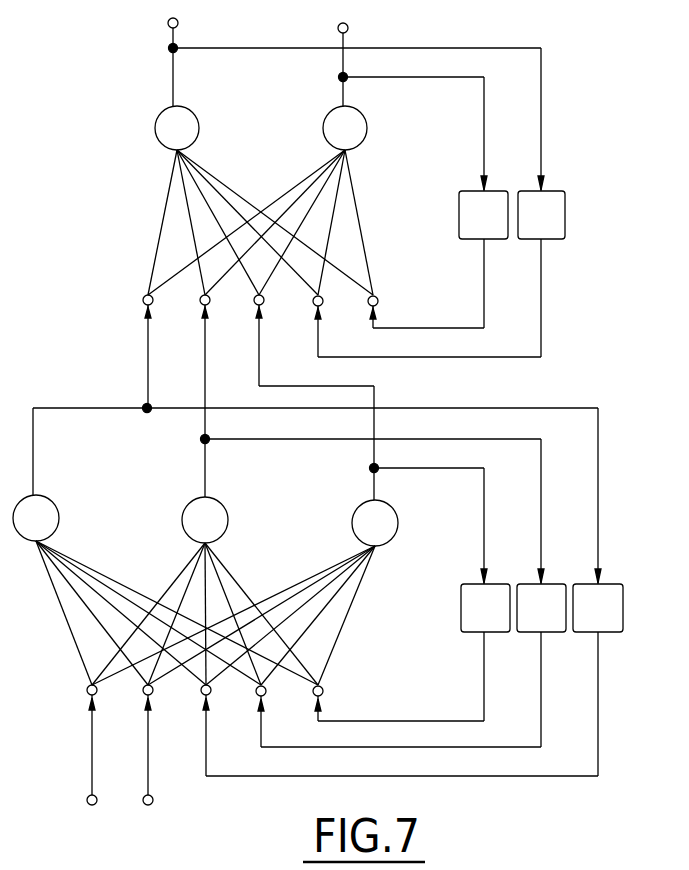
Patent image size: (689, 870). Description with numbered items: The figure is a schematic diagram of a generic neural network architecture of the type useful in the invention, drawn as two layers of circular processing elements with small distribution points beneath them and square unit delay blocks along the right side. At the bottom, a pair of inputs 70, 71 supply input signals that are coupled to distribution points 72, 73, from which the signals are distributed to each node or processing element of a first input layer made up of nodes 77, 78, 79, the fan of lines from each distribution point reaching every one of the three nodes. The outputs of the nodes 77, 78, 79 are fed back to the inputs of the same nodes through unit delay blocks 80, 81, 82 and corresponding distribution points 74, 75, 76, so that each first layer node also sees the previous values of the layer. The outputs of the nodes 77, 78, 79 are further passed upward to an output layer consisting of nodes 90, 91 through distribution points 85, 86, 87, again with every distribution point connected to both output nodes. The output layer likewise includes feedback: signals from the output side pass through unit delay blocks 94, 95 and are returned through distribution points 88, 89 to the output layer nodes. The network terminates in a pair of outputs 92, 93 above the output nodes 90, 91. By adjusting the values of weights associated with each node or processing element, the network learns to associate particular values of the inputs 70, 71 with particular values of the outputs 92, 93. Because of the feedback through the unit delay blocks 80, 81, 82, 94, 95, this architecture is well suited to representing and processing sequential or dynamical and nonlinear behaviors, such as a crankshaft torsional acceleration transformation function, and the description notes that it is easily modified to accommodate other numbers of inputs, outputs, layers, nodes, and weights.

The input 70 is at (90, 805).
The input 71 is at (151, 805).
The distribution point 72 is at (87, 693).
The distribution point 73 is at (143, 693).
The distribution point 74 is at (201, 693).
The distribution point 75 is at (256, 694).
The distribution point 76 is at (323, 689).
The node 77 is at (55, 503).
The node 78 is at (224, 505).
The node 79 is at (394, 510).
The unit delay block 80 is at (618, 582).
The unit delay block 81 is at (556, 584).
The unit delay block 82 is at (461, 592).
The distribution point 85 is at (143, 302).
The distribution point 86 is at (200, 302).
The distribution point 87 is at (254, 303).
The distribution point 88 is at (313, 304).
The distribution point 89 is at (378, 299).
The output layer node 90 is at (155, 128).
The output layer node 91 is at (367, 128).
The output 92 is at (178, 24).
The output 93 is at (338, 30).
The unit delay block 94 is at (562, 185).
The unit delay block 95 is at (462, 188).